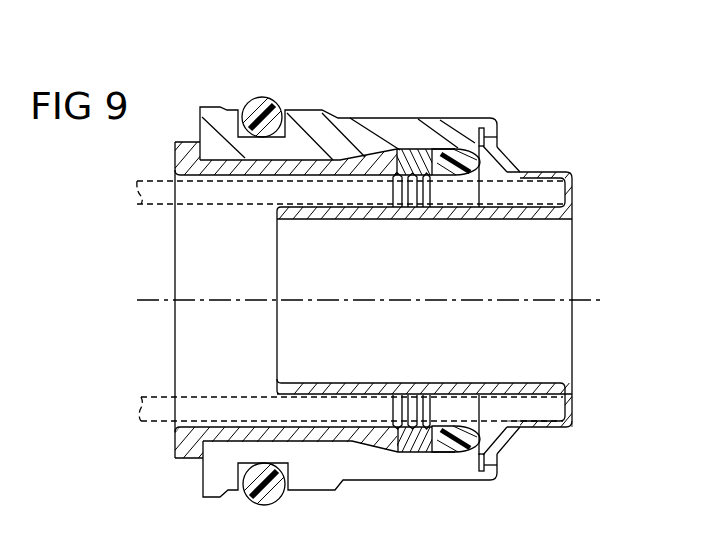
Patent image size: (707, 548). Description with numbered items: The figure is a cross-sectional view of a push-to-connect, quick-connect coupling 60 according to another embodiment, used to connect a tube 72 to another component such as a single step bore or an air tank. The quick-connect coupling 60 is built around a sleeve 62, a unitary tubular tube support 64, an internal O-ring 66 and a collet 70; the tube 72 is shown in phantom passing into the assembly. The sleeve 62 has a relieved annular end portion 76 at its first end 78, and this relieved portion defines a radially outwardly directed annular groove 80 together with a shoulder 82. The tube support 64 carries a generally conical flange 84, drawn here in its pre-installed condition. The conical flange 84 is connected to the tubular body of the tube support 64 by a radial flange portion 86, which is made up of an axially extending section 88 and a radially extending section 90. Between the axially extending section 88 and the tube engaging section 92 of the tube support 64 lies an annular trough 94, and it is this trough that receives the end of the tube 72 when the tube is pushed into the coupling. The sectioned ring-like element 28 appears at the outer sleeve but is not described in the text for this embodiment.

The quick-connect coupling 60 is at (190, 106).
The O-ring 28 is at (262, 97).
The sleeve 62 is at (377, 117).
The tubular tube support 64 is at (537, 252).
The internal O-ring 66 is at (462, 157).
The collet 70 is at (185, 458).
The tube 72 is at (158, 207).
The relieved annular end portion 76 is at (503, 133).
The first end 78 is at (485, 122).
The annular groove 80 is at (481, 458).
The shoulder 82 is at (484, 145).
The conical flange 84 is at (510, 440).
The radial flange portion 86 is at (577, 428).
The axially extending section 88 is at (550, 170).
The radially extending section 90 is at (565, 405).
The tube engaging section 92 is at (345, 367).
The annular trough 94 is at (550, 410).